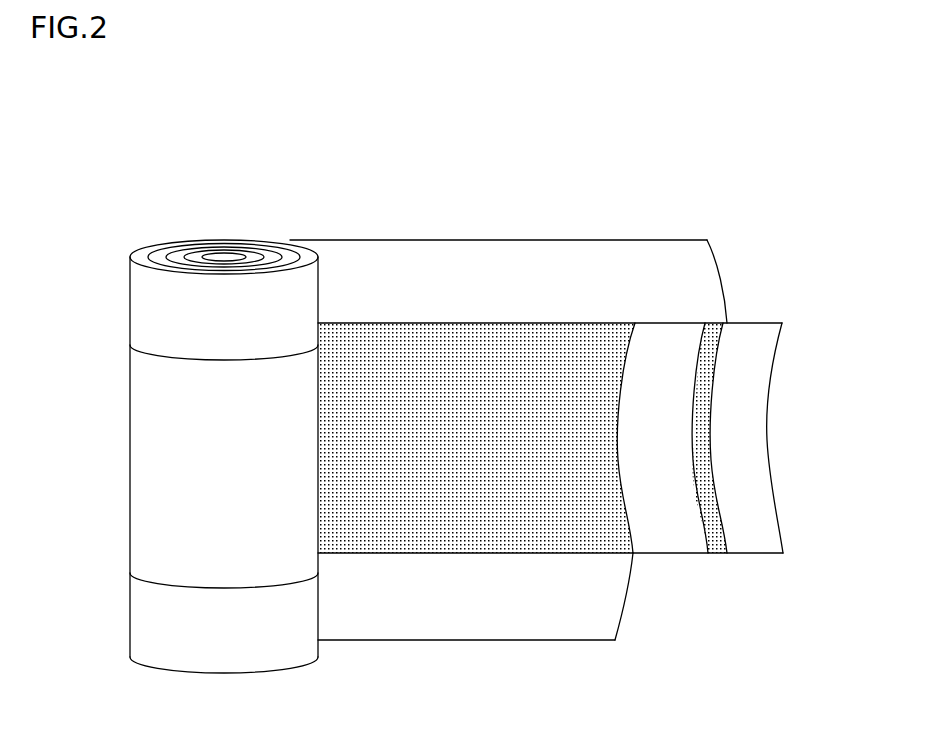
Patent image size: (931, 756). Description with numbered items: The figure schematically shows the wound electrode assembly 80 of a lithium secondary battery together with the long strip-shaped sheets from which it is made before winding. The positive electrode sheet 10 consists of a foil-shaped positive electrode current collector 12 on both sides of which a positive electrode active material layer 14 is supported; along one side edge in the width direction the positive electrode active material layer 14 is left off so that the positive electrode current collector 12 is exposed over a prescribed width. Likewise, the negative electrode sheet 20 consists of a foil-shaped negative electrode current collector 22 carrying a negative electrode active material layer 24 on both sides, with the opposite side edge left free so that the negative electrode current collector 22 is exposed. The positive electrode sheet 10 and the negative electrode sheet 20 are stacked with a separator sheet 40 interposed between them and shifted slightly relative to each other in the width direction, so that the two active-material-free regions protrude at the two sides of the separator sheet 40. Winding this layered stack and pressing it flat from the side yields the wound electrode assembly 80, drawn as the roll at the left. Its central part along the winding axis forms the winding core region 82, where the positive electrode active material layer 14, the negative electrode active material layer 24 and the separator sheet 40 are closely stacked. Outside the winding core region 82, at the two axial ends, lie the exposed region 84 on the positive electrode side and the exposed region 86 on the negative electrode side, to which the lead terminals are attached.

The positive electrode sheet 10 is at (547, 440).
The positive electrode current collector 12 is at (560, 255).
The positive electrode active material layer 14 is at (713, 333).
The negative electrode sheet 20 is at (393, 642).
The negative electrode current collector 22 is at (516, 622).
The negative electrode active material layer 24 is at (577, 535).
The separator sheet 40 is at (667, 542).
The wound electrode assembly 80 is at (178, 410).
The winding core region 82 is at (153, 453).
The exposed region on the positive electrode side 84 is at (153, 322).
The exposed region on the negative electrode side 86 is at (153, 621).